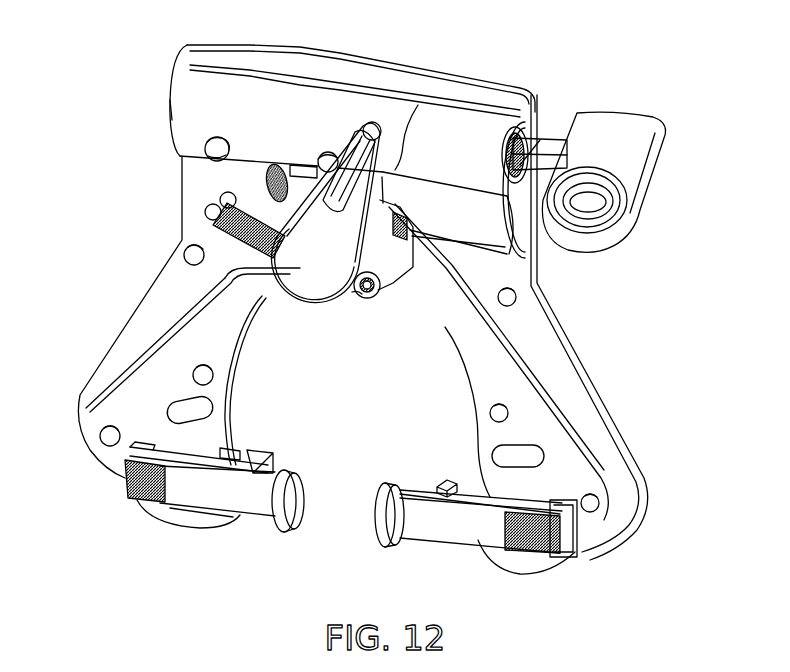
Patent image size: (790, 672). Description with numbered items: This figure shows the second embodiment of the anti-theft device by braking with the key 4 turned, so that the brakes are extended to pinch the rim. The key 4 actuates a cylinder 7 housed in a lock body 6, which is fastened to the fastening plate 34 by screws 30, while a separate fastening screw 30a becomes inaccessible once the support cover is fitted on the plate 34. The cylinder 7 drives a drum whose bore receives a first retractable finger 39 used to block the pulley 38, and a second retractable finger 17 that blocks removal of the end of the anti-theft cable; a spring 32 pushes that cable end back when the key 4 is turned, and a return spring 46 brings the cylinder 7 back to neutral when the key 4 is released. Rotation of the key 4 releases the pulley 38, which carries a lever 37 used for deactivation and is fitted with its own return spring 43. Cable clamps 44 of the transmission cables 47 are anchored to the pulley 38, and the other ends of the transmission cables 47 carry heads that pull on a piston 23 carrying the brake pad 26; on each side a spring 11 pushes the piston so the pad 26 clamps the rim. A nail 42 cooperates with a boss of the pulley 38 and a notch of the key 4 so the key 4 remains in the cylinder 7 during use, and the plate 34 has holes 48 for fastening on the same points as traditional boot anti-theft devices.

The key 4 is at (616, 158).
The lock body 6 is at (450, 226).
The cylinder 7 is at (280, 133).
The spring 11 is at (547, 547).
The second retractable finger 17 is at (180, 153).
The piston 23 is at (380, 505).
The brake pad 26 is at (375, 519).
The screw 30 is at (181, 258).
The fastening screw 30a is at (487, 490).
The spring 32 is at (265, 184).
The fastening plate 34 is at (534, 323).
The lever 37 is at (324, 278).
The pulley 38 is at (383, 291).
The first retractable finger 39 is at (328, 153).
The nail 42 is at (397, 170).
The return spring 43 is at (215, 218).
The cable clamp 44 is at (356, 294).
The return spring 46 is at (165, 96).
The transmission cable 47 is at (183, 317).
The hole 48 is at (523, 453).